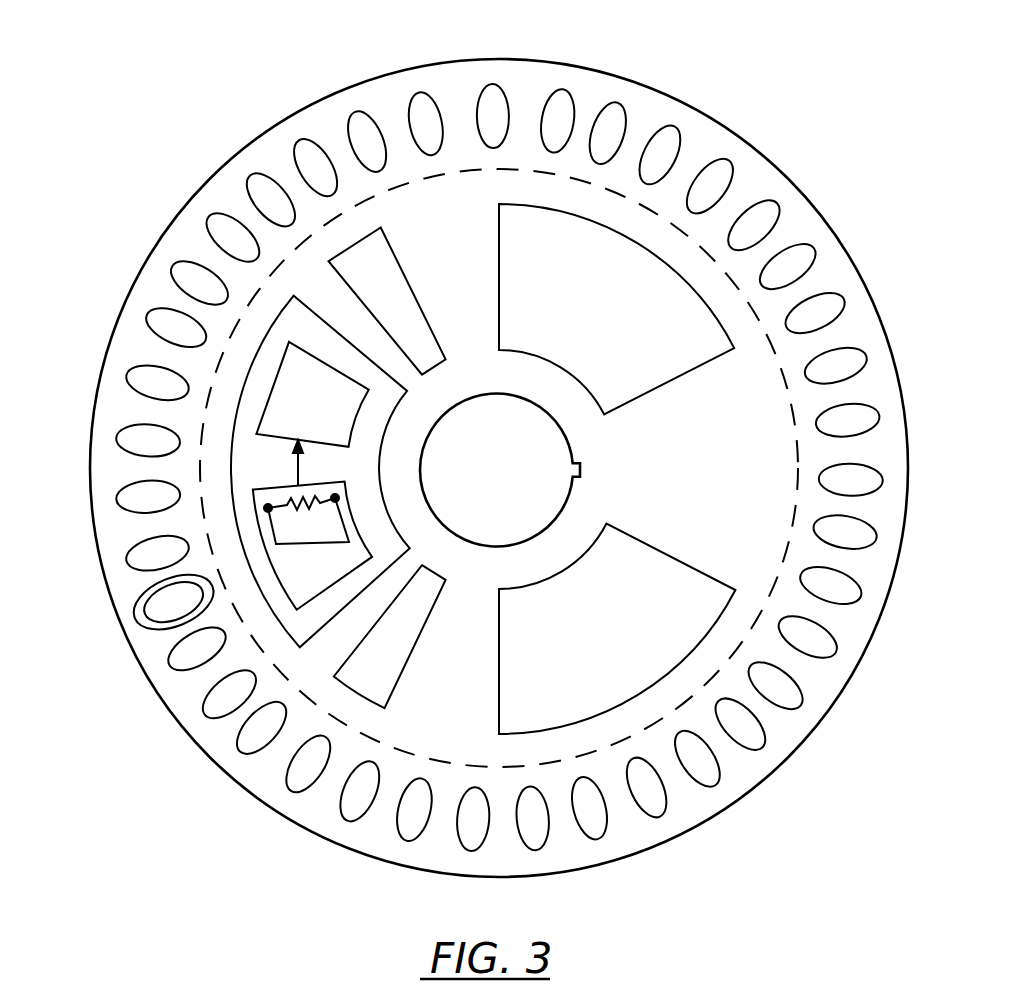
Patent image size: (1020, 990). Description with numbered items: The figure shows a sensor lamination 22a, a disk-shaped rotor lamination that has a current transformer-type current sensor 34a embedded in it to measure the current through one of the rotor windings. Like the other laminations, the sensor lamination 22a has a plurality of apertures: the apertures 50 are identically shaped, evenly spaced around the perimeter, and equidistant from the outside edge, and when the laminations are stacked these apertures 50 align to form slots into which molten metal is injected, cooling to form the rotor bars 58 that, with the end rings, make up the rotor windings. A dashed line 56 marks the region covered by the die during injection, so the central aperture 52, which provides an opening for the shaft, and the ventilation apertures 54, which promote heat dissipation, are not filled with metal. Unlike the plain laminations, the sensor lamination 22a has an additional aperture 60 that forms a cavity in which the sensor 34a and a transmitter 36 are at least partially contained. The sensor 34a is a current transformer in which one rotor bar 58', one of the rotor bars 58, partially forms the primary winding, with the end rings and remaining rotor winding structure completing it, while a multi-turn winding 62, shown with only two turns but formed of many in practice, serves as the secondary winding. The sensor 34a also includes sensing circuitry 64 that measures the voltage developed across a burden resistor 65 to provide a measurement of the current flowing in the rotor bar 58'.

The sensor lamination 22a is at (505, 61).
The apertures 50 is at (624, 119).
The rotor bars 58 is at (129, 351).
The rotor bar 58' is at (126, 602).
The multi-turn winding 62 is at (148, 633).
The dashed line 56 is at (791, 415).
The apertures 54 is at (404, 268).
The aperture 52 is at (530, 383).
The additional aperture 60 is at (410, 393).
The transmitter 36 is at (310, 324).
The sensing circuitry 64 is at (346, 485).
The burden resistor 65 is at (286, 494).
The sensor 34a is at (160, 607).